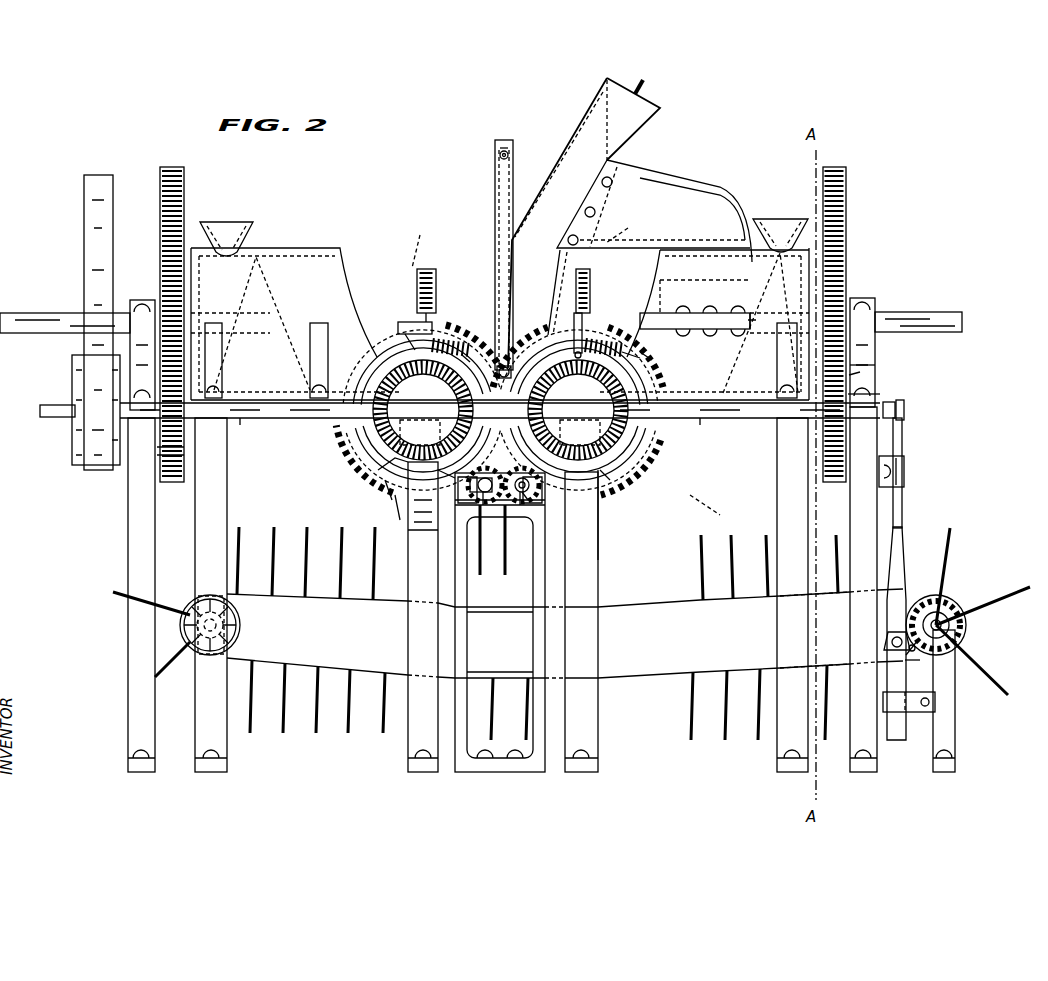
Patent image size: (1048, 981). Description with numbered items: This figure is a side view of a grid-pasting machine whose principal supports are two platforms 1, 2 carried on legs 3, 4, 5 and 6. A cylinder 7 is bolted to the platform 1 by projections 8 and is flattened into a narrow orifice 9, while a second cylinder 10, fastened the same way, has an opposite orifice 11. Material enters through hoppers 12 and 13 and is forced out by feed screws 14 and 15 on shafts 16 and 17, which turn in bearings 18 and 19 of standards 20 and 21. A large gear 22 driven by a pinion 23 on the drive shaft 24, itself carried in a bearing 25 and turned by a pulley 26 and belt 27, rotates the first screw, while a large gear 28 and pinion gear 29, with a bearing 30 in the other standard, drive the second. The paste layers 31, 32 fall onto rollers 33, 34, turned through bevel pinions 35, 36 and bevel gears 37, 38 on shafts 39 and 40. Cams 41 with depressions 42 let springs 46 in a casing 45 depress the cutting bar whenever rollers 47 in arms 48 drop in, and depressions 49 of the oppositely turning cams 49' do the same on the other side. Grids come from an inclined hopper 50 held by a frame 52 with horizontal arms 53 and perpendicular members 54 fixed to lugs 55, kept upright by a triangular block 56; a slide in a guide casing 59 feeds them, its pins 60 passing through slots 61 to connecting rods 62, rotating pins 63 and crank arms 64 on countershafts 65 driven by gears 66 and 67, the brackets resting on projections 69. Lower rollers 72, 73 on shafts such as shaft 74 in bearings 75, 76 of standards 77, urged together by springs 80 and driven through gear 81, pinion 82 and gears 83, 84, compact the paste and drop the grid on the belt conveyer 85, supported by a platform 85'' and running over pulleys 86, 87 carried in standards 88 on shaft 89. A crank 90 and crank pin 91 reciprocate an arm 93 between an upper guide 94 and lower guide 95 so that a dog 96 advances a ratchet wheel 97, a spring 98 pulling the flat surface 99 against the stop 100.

The platform 1 is at (286, 418).
The platform 2 is at (728, 418).
The legs 3 is at (211, 595).
The legs 4 is at (423, 617).
The legs 5 is at (581, 622).
The legs 6 is at (792, 595).
The cylinder 7 is at (310, 255).
The projections 8 is at (797, 385).
The orifice 9 is at (436, 320).
The cylinder 10 is at (758, 240).
The orifice 11 is at (575, 335).
The hopper 12 is at (225, 230).
The hopper 13 is at (778, 228).
The feed screw 14 is at (280, 278).
The feed screw 15 is at (705, 345).
The projecting shaft 16 is at (52, 313).
The shaft 17 is at (940, 313).
The bearing 18 is at (142, 300).
The bearing 19 is at (866, 298).
The standard 20 is at (128, 524).
The standard 21 is at (876, 372).
The large gear 22 is at (160, 212).
The pinion 23 is at (172, 450).
The drive shaft 24 is at (702, 418).
The bearing 25 is at (140, 400).
The pulley 26 is at (72, 455).
The belt 27 is at (84, 240).
The large gear 28 is at (846, 212).
The pinion gear 29 is at (860, 373).
The bearing 30 is at (878, 396).
The paste layer 31 is at (448, 342).
The paste layer 32 is at (547, 345).
The cylindrical roller 33 is at (355, 468).
The cylindrical roller 34 is at (622, 470).
The bevel pinion 35 is at (346, 436).
The bevel pinion 36 is at (640, 420).
The bevel gear 37 is at (330, 472).
The bevel gear 38 is at (636, 436).
The shaft 39 is at (385, 480).
The shaft 40 is at (560, 486).
The cam 41 is at (385, 365).
The depressions 42 is at (420, 345).
The casing 45 is at (592, 290).
The springs 46 is at (517, 240).
The rollers 47 is at (630, 345).
The projecting arms 48 is at (614, 340).
The depressions 49 is at (657, 343).
The cams 49' is at (718, 510).
The inclined hopper 50 is at (568, 176).
The frame 52 is at (724, 196).
The horizontal arms 53 is at (654, 211).
The perpendicular members 54 is at (695, 296).
The projecting lugs 55 is at (745, 333).
The sliding triangular block 56 is at (655, 108).
The guide casing 59 is at (495, 175).
The pins 60 is at (500, 157).
The slots 61 is at (508, 150).
The connecting rods 62 is at (499, 210).
The rotating pins 63 is at (506, 370).
The crank arms 64 is at (470, 388).
The countershafts 65 is at (610, 388).
The gears 66 is at (580, 432).
The gears 67 is at (598, 472).
The projections 69 is at (388, 490).
The roller 72 is at (478, 482).
The roller 73 is at (531, 482).
The shaft 74 is at (520, 500).
The bearings 75 is at (536, 495).
The bearings 76 is at (481, 540).
The standards 77 is at (540, 655).
The springs 80 is at (506, 540).
The gear 81 is at (397, 502).
The pinion 82 is at (600, 520).
The gear 83 is at (442, 485).
The gear 84 is at (585, 487).
The belt conveyer 85 is at (565, 633).
The platform 85'' is at (500, 642).
The end pulley 86 is at (240, 625).
The end pulley 87 is at (912, 595).
The standards 88 is at (955, 740).
The shaft 89 is at (949, 625).
The crank 90 is at (897, 406).
The crank pin 91 is at (905, 414).
The arm 93 is at (903, 503).
The upper guide 94 is at (905, 471).
The lower guide 95 is at (890, 702).
The dog 96 is at (895, 638).
The ratchet wheel 97 is at (966, 605).
The spring 98 is at (915, 655).
The lower flat surface 99 is at (897, 650).
The stop 100 is at (908, 662).